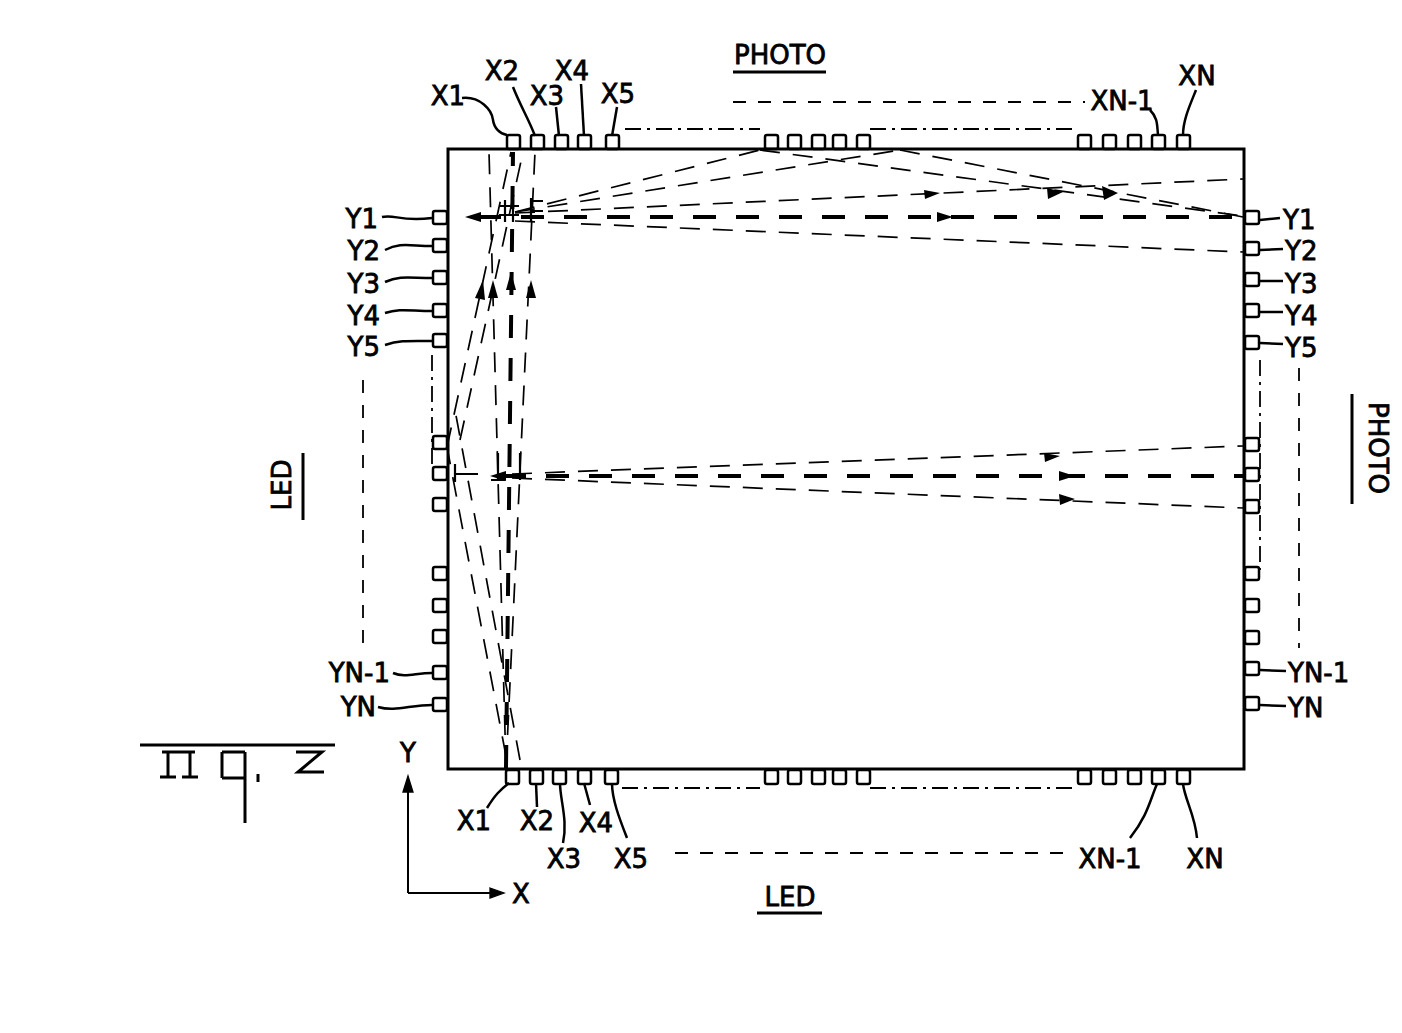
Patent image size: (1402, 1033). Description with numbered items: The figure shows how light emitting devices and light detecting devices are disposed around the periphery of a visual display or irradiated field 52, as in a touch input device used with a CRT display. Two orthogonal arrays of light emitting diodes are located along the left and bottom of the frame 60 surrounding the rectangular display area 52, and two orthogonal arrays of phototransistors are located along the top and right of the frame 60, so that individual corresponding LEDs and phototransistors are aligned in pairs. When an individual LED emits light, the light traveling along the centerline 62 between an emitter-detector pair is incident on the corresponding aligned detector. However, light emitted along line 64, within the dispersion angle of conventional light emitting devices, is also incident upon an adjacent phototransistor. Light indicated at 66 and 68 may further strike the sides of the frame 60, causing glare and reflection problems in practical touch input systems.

The irradiated field 52 is at (1243, 203).
The frame 60 is at (448, 149).
The centerline 62 is at (540, 384).
The line 64 is at (522, 428).
The light 66 is at (722, 177).
The light 68 is at (603, 183).